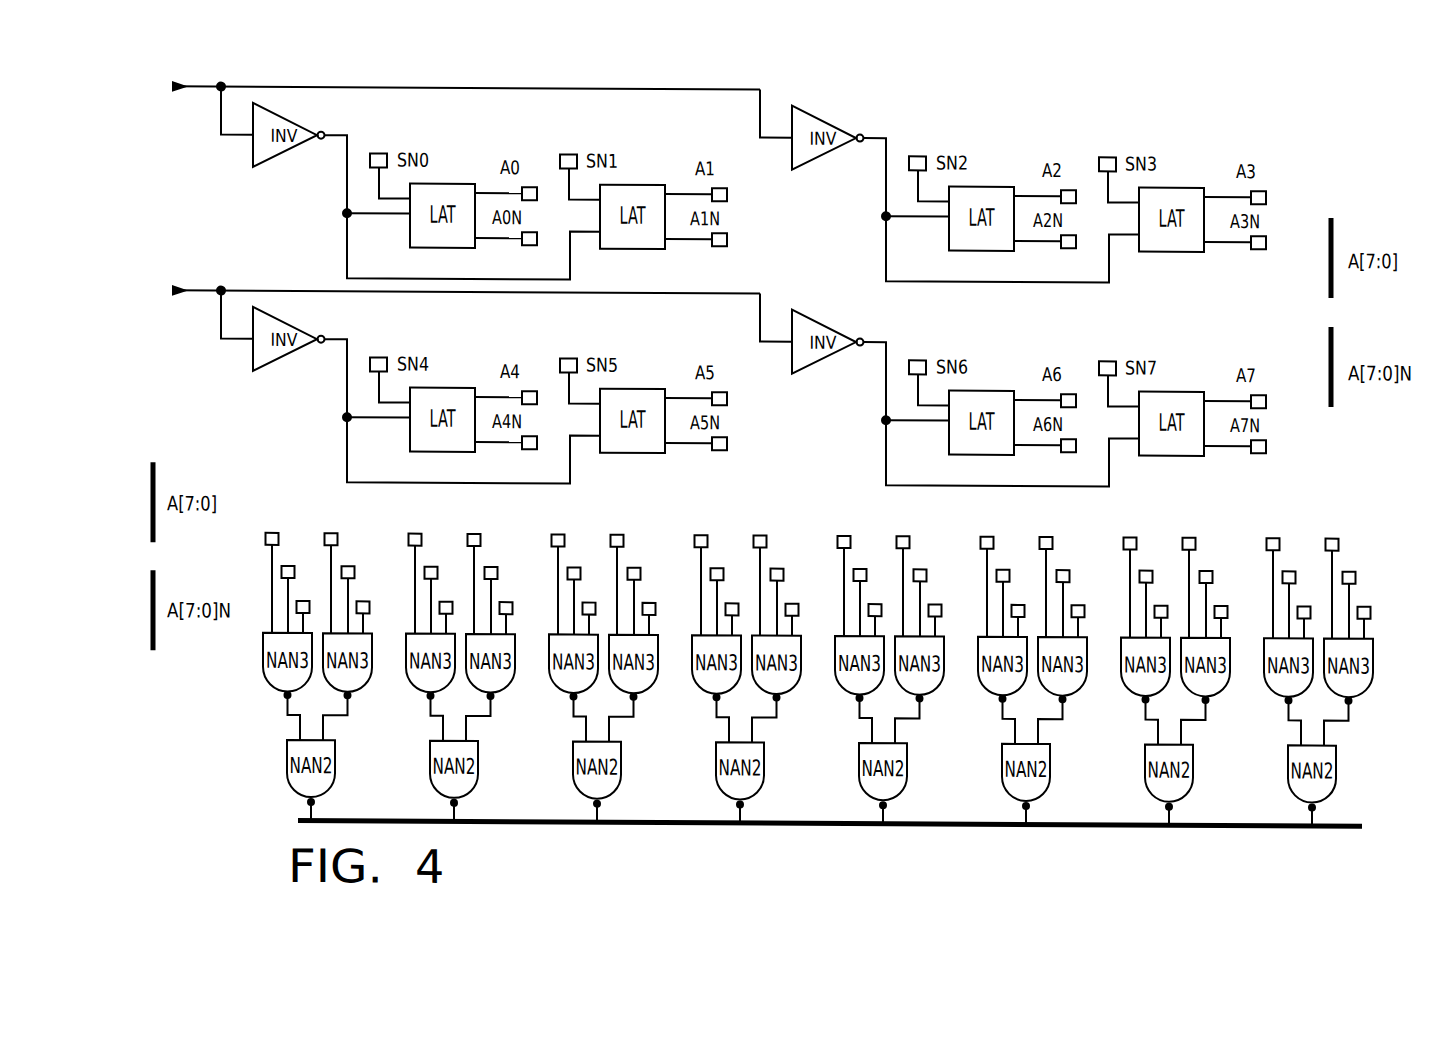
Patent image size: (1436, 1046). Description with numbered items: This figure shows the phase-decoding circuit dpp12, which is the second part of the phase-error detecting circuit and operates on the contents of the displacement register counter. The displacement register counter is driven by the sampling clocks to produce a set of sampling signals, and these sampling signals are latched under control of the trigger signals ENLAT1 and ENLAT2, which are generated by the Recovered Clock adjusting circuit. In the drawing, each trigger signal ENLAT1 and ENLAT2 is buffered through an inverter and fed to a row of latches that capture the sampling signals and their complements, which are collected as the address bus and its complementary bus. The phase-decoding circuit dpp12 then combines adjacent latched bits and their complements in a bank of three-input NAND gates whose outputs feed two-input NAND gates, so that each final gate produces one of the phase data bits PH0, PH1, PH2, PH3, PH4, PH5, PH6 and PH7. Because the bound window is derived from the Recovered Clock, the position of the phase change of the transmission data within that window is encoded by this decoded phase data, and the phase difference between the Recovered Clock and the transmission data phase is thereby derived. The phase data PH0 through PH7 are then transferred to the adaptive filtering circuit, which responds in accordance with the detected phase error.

The phase-decoding circuit dpp12 is at (960, 842).
The ENLAT trigger signal ENLAT1 is at (454, 74).
The ENLAT trigger signal ENLAT2 is at (454, 278).
The phase data bit PH0 is at (315, 665).
The phase data bit PH1 is at (458, 665).
The phase data bit PH2 is at (601, 666).
The phase data bit PH3 is at (744, 667).
The phase data bit PH4 is at (887, 668).
The phase data bit PH5 is at (1030, 669).
The phase data bit PH6 is at (1173, 669).
The phase data bit PH7 is at (1317, 670).